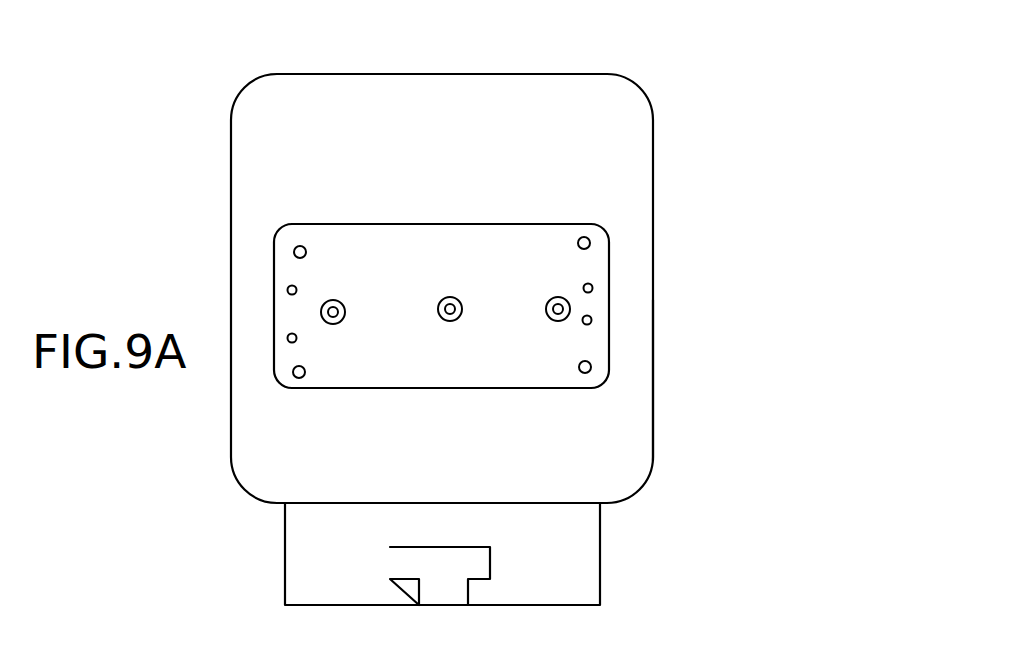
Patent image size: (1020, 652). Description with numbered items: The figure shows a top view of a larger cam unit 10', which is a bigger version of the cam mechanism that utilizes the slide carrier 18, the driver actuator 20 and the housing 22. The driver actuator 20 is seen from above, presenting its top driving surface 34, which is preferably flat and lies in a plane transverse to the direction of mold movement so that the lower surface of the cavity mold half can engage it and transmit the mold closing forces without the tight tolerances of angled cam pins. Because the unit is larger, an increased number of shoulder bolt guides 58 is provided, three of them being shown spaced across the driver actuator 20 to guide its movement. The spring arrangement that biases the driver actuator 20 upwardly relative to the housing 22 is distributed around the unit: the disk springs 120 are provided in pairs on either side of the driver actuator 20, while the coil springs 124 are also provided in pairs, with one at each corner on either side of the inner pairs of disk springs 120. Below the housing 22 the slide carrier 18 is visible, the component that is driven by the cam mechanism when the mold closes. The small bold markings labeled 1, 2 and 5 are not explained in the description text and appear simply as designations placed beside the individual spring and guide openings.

The larger cam unit 10' is at (484, 259).
The slide carrier 18 is at (575, 545).
The driver actuator 20 is at (393, 362).
The housing 22 is at (640, 350).
The top driving surface 34 is at (491, 377).
The shoulder bolt guides 58 is at (547, 292).
The disk springs 120 is at (288, 337).
The coil springs 124 is at (300, 246).
The pin designation 1 is at (297, 287).
The pin designation 2 is at (307, 250).
The pin designation 5 is at (343, 303).